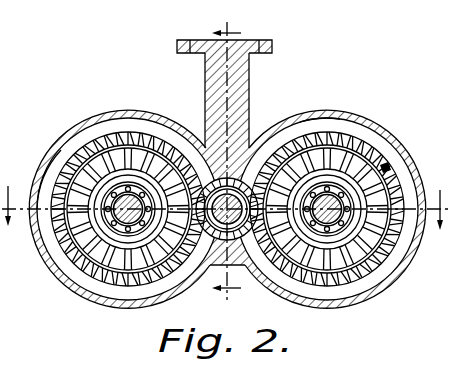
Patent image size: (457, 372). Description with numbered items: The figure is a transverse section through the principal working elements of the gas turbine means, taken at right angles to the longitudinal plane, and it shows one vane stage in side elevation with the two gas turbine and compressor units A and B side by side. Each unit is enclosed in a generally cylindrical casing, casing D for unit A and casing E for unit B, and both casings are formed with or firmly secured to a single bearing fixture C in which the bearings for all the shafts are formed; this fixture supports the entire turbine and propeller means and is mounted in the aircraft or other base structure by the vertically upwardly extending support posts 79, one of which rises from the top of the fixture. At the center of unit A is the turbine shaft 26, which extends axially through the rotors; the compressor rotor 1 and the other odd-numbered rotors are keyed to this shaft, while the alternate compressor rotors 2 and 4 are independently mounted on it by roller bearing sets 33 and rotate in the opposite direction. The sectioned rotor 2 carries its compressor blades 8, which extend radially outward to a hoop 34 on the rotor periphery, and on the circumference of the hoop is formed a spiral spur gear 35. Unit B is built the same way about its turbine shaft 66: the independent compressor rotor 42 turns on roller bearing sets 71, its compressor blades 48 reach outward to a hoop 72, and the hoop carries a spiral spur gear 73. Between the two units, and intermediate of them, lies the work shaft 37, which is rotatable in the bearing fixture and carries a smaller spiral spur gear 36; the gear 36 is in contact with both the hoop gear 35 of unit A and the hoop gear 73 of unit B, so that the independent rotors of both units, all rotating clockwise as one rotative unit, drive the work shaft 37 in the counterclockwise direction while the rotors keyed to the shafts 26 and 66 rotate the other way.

The compressor rotor 1 is at (223, 200).
The compressor rotor 2 is at (101, 212).
The compressor rotor 4 is at (226, 161).
The compressor blades 8 is at (148, 260).
The turbine shaft 26 is at (100, 265).
The roller bearing sets 33 is at (46, 255).
The hoops 34 is at (100, 147).
The spiral spur gears 35 is at (62, 165).
The spiral spur gear 36 is at (252, 132).
The work shaft 37 is at (204, 136).
The compressor rotor 42 is at (312, 245).
The compressor blades 48 is at (328, 262).
The turbine shaft 66 is at (382, 252).
The roller bearing sets 71 is at (344, 232).
The hoops 72 is at (387, 168).
The spiral spur gears 73 is at (400, 239).
The support posts 79 is at (205, 71).
The gas turbine and compressor unit A is at (115, 112).
The gas turbine and compressor unit B is at (340, 112).
The bearing fixture C is at (257, 150).
The casing D is at (52, 146).
The casing E is at (400, 136).